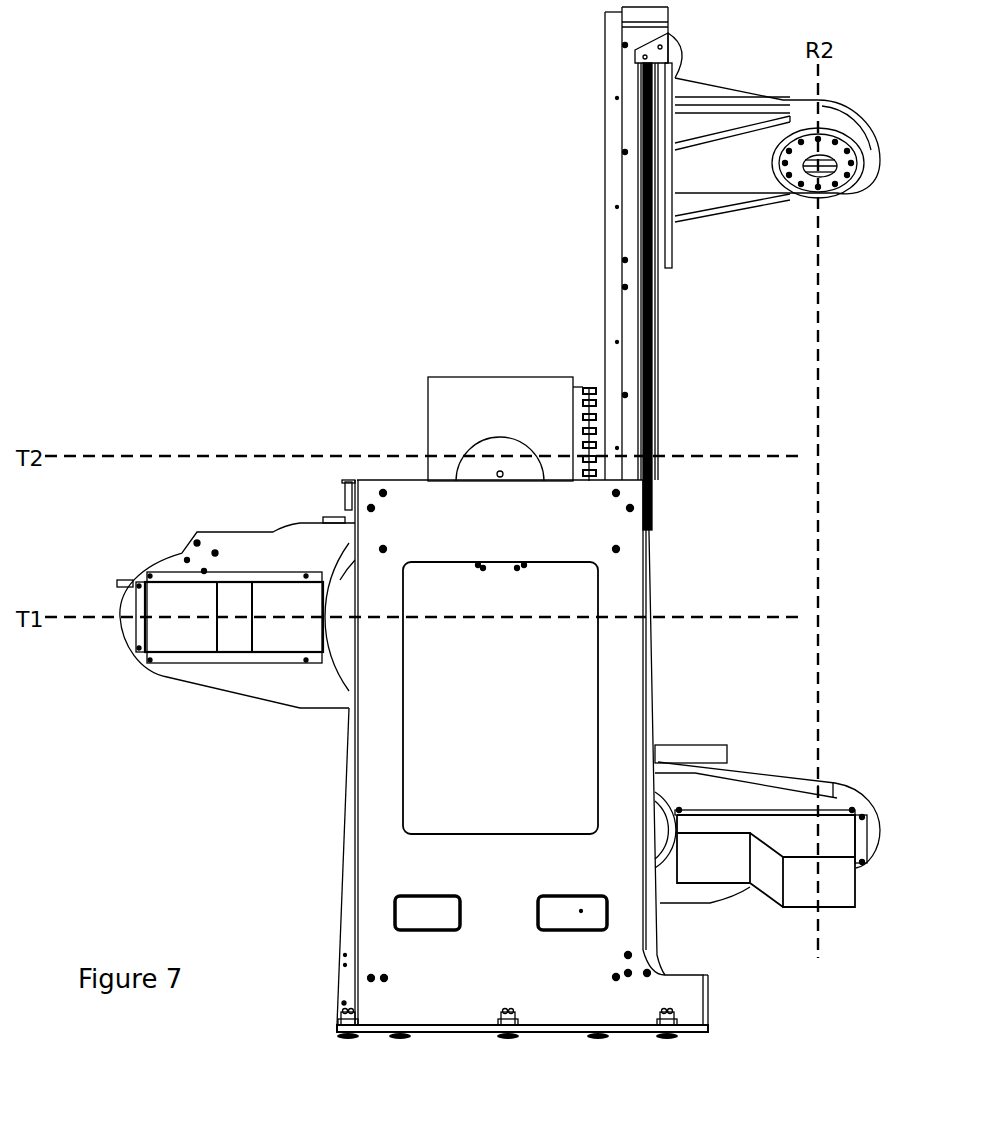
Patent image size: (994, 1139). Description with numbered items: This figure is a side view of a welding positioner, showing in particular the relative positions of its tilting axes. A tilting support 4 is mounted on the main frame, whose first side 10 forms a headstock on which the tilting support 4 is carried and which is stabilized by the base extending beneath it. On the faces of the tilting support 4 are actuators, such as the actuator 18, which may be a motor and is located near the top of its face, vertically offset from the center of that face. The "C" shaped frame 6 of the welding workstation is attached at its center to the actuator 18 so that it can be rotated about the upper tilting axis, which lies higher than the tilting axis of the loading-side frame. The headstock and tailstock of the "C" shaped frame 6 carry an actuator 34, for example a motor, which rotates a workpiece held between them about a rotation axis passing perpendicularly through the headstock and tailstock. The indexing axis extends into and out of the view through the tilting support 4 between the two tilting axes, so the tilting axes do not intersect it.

The tilting support 4 is at (457, 393).
The "C" shaped frame 6 is at (650, 393).
The first side 10 is at (522, 759).
The actuator 18 is at (582, 387).
The actuator 34 is at (235, 675).